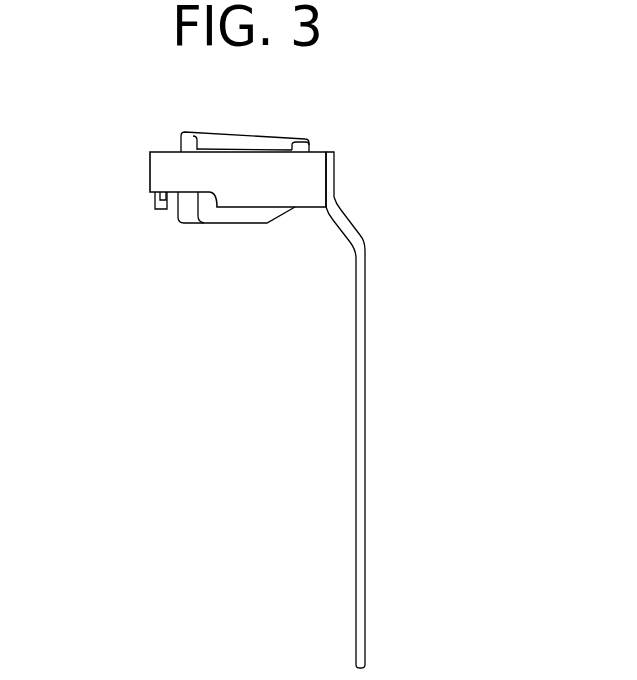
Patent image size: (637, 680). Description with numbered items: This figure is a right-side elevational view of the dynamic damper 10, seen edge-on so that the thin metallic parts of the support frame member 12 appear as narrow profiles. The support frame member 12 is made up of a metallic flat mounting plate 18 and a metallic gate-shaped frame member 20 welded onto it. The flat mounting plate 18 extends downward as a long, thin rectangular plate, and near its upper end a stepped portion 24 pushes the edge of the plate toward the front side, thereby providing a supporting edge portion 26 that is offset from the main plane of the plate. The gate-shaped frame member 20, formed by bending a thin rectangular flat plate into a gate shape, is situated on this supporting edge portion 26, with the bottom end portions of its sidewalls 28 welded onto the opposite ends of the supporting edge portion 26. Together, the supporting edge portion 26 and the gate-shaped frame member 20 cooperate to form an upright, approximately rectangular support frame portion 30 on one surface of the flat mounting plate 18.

The dynamic damper 10 is at (135, 240).
The support frame member 12 is at (203, 282).
The flat mounting plate 18 is at (347, 389).
The gate-shaped frame member 20 is at (253, 216).
The stepped portion 24 is at (348, 222).
The supporting edge portion 26 is at (328, 175).
The sidewall 28 is at (218, 168).
The support frame portion 30 is at (138, 169).